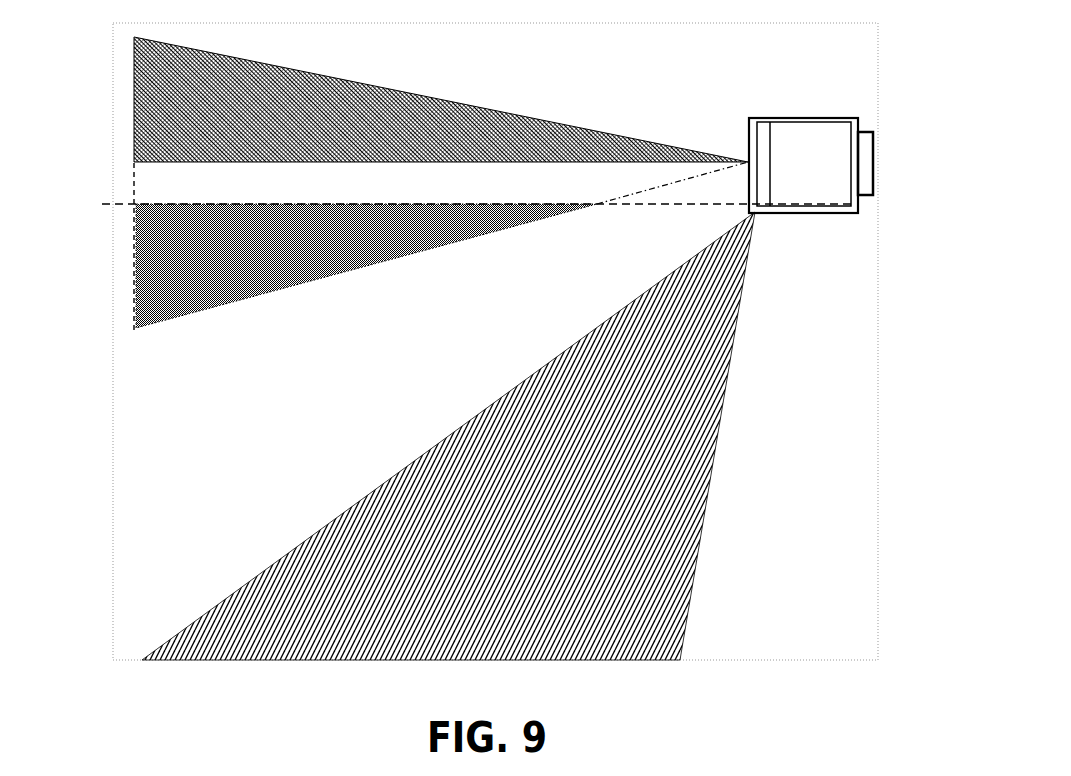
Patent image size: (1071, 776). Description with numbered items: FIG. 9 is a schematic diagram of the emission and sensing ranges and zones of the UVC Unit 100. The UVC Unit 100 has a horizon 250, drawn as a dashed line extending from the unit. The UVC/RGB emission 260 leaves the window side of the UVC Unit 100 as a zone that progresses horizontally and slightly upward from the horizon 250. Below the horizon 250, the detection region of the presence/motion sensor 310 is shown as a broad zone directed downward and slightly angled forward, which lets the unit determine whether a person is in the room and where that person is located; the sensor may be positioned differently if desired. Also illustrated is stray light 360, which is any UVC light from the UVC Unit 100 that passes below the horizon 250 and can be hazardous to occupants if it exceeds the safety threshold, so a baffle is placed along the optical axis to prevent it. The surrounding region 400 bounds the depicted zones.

The camera / imaging device 100 is at (832, 148).
The optical axis 250 is at (132, 205).
The upper illumination beam 260 is at (172, 103).
The camera field of view 310 is at (287, 605).
The lower illumination beam 360 is at (178, 260).
The scene / detection area 400 is at (495, 341).